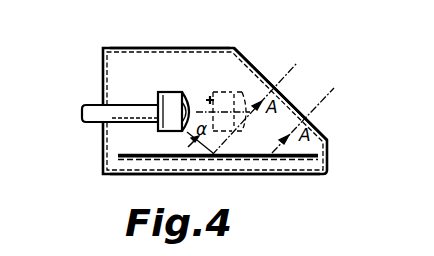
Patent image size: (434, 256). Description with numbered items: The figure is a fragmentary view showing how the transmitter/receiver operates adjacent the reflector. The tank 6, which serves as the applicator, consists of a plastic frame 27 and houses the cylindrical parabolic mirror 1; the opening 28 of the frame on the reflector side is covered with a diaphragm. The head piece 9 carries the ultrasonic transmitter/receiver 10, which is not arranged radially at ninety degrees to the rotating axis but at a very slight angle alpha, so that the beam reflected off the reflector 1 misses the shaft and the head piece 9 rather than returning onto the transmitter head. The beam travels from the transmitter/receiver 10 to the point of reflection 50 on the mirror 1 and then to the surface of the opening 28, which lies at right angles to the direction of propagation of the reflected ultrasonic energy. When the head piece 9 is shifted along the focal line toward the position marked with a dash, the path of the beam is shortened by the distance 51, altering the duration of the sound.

The tank 6 is at (100, 63).
The plastic frame 27 is at (165, 65).
The opening 28 is at (259, 73).
The head piece 9 is at (182, 95).
The transmitter/receiver 10 is at (182, 131).
The point of reflection 50 is at (211, 154).
The distance 51 is at (233, 148).
The cylindrical parabolic mirror 1 is at (303, 158).